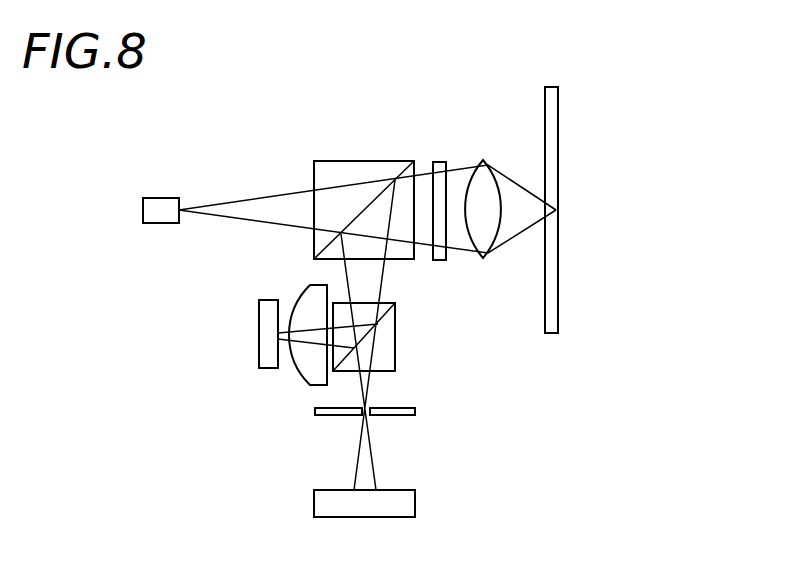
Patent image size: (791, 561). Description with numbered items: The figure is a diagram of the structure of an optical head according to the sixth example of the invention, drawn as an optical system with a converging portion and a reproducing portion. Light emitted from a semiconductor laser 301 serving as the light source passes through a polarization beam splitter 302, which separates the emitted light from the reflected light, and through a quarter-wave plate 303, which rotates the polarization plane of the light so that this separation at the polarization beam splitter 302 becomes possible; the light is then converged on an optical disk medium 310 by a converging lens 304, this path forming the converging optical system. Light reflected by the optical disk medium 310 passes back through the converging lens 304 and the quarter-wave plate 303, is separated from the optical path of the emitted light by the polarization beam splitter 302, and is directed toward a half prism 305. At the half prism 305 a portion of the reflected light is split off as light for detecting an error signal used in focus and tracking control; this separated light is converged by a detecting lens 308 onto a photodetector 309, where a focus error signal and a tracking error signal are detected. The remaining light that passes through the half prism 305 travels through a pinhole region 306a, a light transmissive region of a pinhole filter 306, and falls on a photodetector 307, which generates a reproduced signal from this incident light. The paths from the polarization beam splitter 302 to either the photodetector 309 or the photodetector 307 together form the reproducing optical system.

The semiconductor laser 301 is at (163, 198).
The polarization beam splitter 302 is at (360, 161).
The quarter-wave plate 303 is at (438, 162).
The converging lens 304 is at (488, 163).
The half prism 305 is at (397, 337).
The pinhole filter 306 is at (417, 412).
The pinhole region 306a is at (381, 425).
The photodetector 307 is at (415, 503).
The detecting lens 308 is at (308, 298).
The photodetector 309 is at (265, 368).
The optical disk medium 310 is at (552, 87).